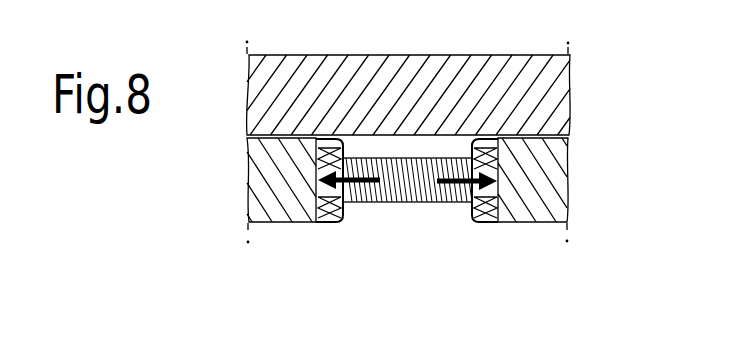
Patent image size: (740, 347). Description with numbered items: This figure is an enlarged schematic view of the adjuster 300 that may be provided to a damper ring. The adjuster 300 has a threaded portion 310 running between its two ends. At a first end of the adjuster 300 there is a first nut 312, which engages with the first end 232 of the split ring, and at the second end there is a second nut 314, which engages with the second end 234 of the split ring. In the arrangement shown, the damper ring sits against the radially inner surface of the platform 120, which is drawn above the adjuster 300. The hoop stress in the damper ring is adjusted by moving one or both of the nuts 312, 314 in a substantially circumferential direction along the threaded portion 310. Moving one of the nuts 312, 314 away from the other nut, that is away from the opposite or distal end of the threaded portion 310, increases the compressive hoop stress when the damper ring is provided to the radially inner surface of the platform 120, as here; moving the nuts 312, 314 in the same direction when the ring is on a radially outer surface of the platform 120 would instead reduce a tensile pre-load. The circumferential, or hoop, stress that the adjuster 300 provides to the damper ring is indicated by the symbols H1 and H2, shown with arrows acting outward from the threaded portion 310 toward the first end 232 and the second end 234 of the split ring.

The platform 120 is at (540, 68).
The first end of the split ring 232 is at (285, 218).
The second end of the split ring 234 is at (535, 218).
The adjuster 300 is at (366, 258).
The threaded portion 310 is at (418, 202).
The first nut 312 is at (331, 222).
The second nut 314 is at (490, 223).
The hoop stress symbol H1 is at (360, 158).
The hoop stress symbol H2 is at (497, 178).